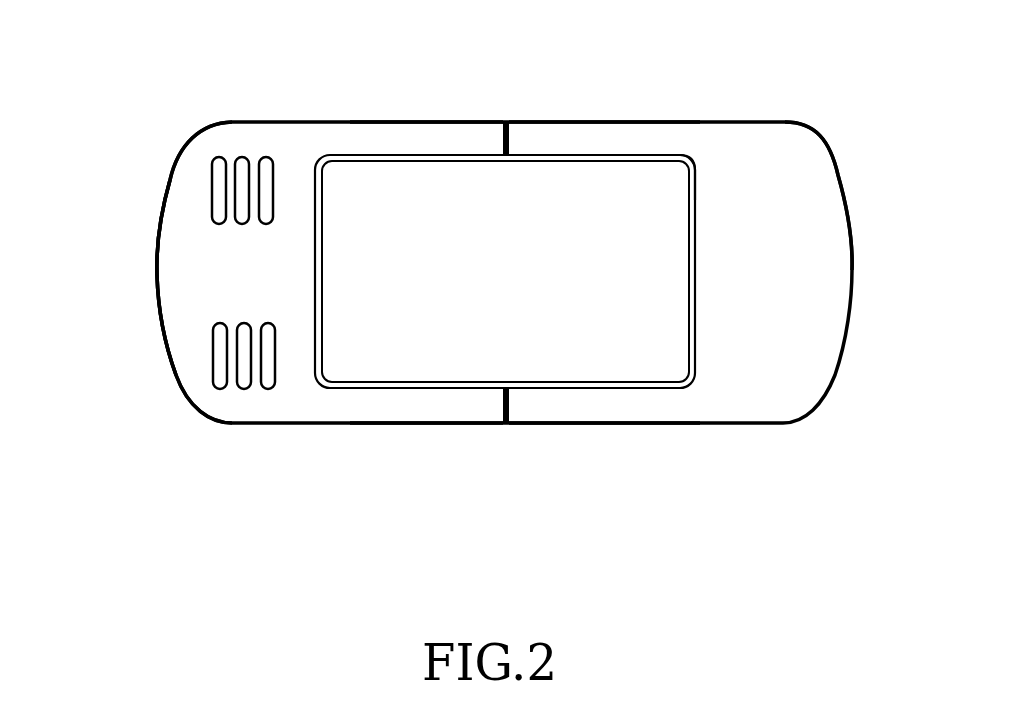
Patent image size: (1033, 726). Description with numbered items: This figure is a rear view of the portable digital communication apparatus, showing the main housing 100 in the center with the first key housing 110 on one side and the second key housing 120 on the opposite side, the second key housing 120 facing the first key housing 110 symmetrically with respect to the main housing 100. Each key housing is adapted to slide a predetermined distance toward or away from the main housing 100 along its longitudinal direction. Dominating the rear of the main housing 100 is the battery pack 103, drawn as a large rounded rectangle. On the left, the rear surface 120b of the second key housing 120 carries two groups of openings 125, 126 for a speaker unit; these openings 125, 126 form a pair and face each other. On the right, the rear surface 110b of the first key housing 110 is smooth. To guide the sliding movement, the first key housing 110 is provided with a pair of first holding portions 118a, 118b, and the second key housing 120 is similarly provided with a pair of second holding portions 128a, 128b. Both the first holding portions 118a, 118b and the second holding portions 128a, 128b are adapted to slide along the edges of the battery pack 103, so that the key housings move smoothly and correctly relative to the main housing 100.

The main housing 100 is at (657, 178).
The battery pack 103 is at (637, 370).
The first key housing 110 is at (871, 289).
The rear surface of first key housing 110b is at (808, 197).
The first holding portion 118a is at (563, 412).
The first holding portion 118b is at (600, 130).
The second key housing 120 is at (139, 298).
The rear surface of second key housing 120b is at (190, 246).
The opening for speaker unit 125 is at (218, 190).
The opening for speaker unit 126 is at (217, 358).
The second holding portion 128a is at (475, 410).
The second holding portion 128b is at (437, 133).